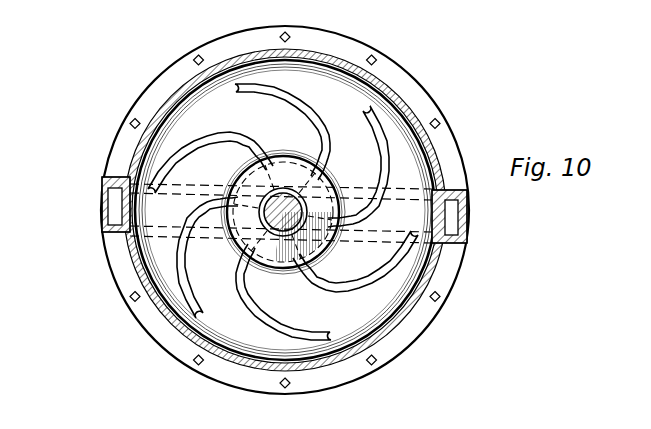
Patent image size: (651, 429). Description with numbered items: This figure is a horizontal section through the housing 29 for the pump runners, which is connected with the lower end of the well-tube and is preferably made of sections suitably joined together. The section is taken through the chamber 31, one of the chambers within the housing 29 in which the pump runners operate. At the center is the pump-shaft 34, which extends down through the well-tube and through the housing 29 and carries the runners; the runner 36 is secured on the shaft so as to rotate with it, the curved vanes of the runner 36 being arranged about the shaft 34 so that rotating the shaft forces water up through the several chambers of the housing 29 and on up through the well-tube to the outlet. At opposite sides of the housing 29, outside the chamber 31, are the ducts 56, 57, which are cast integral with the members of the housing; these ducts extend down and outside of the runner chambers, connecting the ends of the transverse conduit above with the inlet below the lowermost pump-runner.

The housing 29 is at (398, 108).
The chamber 31 is at (407, 158).
The pump-shaft 34 is at (283, 190).
The runner 36 is at (366, 110).
The duct 56 is at (120, 208).
The duct 57 is at (452, 222).